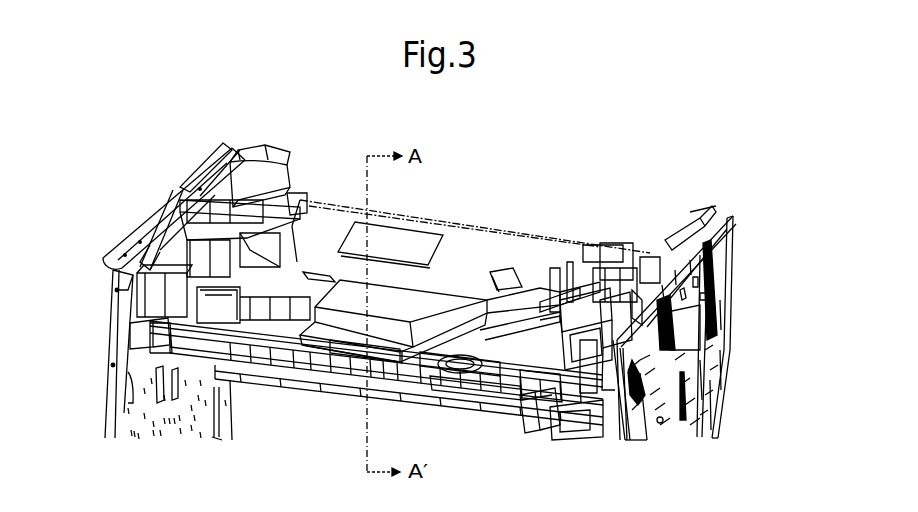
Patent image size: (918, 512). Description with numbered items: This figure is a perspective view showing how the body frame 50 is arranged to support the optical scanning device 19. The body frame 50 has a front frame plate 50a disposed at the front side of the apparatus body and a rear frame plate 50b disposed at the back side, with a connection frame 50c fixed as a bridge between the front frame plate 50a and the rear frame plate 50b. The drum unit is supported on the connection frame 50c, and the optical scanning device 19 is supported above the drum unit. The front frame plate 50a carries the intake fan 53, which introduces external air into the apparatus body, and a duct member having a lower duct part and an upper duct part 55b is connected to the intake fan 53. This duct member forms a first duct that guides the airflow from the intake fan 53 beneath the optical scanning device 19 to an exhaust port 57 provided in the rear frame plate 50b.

The optical scanning device 19 is at (476, 213).
The body frame 50 is at (262, 138).
The front frame plate 50a is at (732, 254).
The rear frame plate 50b is at (145, 222).
The connection frame 50c is at (330, 394).
The intake fan 53 is at (648, 425).
The upper duct part 55b is at (106, 253).
The exhaust port 57 is at (108, 339).